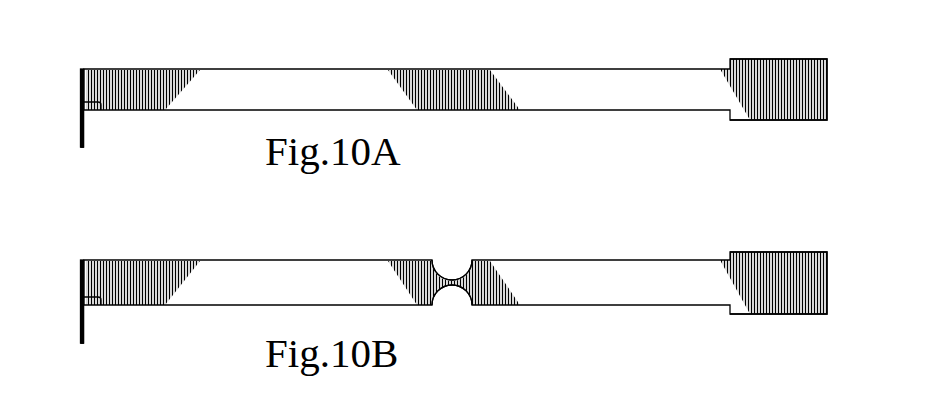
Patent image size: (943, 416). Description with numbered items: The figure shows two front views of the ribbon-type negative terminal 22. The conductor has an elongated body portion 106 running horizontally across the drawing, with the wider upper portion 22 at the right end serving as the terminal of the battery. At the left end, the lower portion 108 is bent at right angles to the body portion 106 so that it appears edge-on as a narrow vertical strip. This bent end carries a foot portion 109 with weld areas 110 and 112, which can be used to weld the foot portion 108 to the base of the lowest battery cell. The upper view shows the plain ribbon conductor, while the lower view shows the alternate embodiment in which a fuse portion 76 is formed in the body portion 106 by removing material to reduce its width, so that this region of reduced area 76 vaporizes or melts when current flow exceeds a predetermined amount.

In FIG. 10A, the ribbon-type negative terminal 22 is at (772, 112).
In FIG. 10B, the ribbon-type negative terminal 22 is at (772, 314).
In FIG. 10B, the fuse portion 76 is at (452, 289).
In FIG. 10A, the elongated body portion 106 is at (469, 60).
In FIG. 10B, the elongated body portion 106 is at (560, 250).
In FIG. 10A, the lower portion 108 is at (81, 68).
In FIG. 10B, the lower portion 108 is at (81, 259).
In FIG. 10A, the foot portion 109 is at (78, 147).
In FIG. 10B, the foot portion 109 is at (82, 343).
In FIG. 10A, the weld area 110 is at (85, 128).
In FIG. 10B, the weld area 110 is at (86, 318).
In FIG. 10A, the weld area 112 is at (89, 105).
In FIG. 10B, the weld area 112 is at (89, 299).